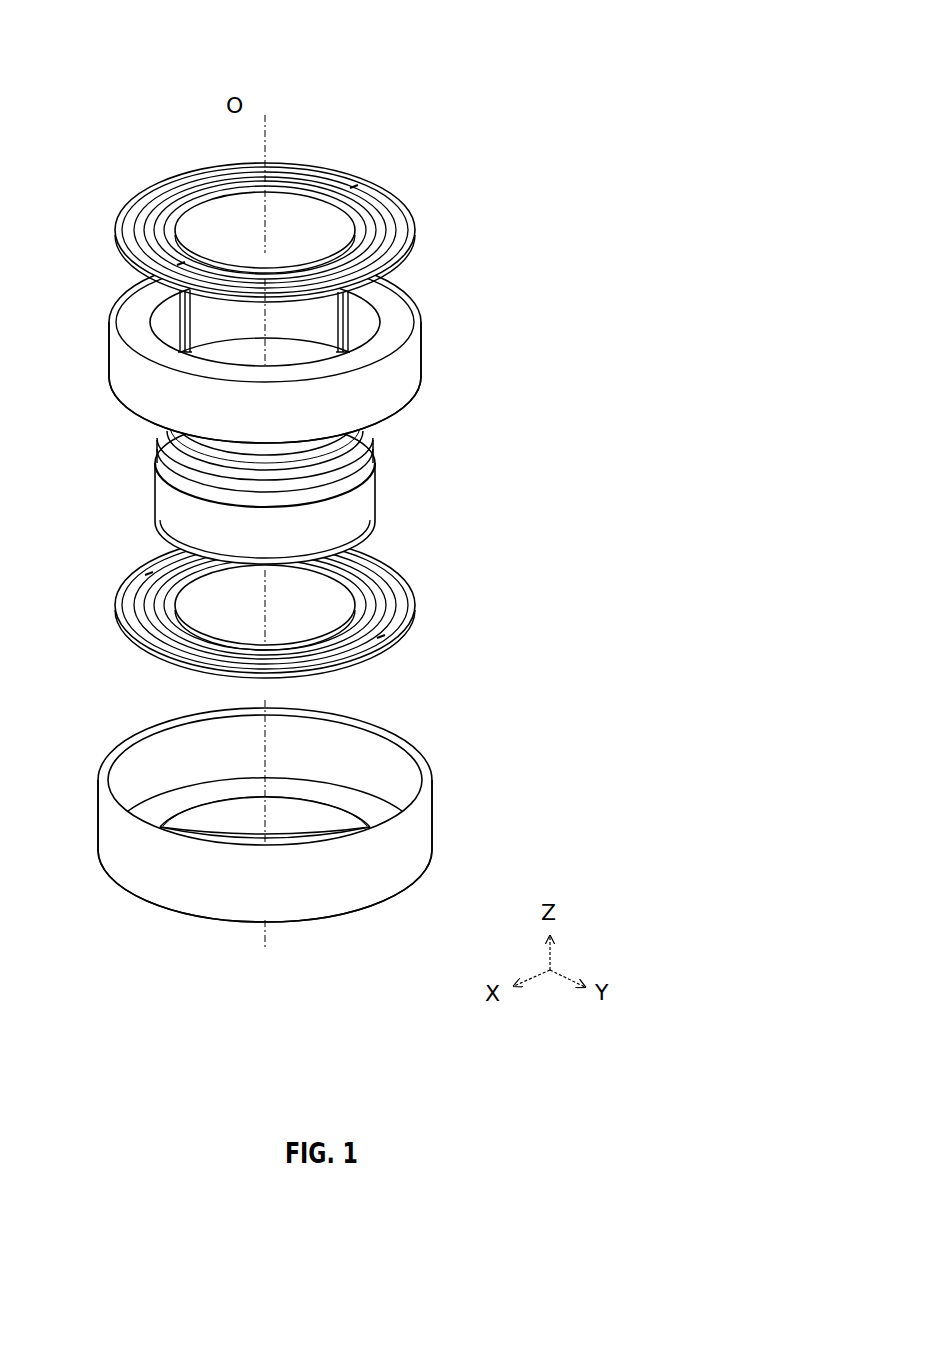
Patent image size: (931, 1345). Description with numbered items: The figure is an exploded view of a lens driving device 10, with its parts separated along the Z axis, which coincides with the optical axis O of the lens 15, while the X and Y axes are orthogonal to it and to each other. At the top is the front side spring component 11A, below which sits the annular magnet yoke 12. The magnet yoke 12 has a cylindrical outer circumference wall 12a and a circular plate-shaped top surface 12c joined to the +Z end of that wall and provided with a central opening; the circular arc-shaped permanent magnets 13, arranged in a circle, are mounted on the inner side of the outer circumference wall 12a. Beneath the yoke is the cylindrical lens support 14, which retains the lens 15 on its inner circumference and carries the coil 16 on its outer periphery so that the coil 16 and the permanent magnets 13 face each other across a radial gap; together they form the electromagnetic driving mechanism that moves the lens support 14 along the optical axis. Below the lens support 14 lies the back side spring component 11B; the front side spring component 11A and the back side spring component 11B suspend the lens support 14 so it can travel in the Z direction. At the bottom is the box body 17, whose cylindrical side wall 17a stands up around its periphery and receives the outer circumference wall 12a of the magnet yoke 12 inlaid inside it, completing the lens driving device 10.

The lens driving device 10 is at (475, 72).
The front side spring component 11A is at (130, 197).
The back side spring component 11B is at (127, 589).
The magnet yoke 12 is at (269, 346).
The outer circumference wall 12a is at (403, 373).
The top surface 12c is at (389, 298).
The permanent magnets 13 is at (218, 316).
The lens support 14 is at (375, 465).
The lens 15 is at (286, 462).
The coil 16 is at (173, 513).
The box body 17 is at (308, 815).
The cylindrical side wall 17a is at (415, 836).